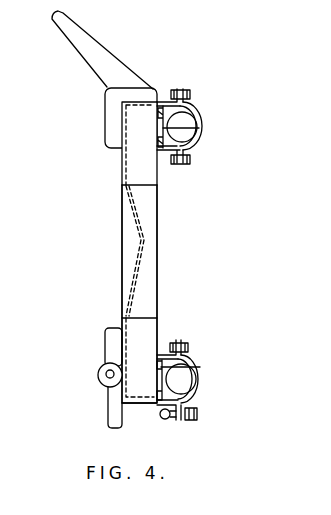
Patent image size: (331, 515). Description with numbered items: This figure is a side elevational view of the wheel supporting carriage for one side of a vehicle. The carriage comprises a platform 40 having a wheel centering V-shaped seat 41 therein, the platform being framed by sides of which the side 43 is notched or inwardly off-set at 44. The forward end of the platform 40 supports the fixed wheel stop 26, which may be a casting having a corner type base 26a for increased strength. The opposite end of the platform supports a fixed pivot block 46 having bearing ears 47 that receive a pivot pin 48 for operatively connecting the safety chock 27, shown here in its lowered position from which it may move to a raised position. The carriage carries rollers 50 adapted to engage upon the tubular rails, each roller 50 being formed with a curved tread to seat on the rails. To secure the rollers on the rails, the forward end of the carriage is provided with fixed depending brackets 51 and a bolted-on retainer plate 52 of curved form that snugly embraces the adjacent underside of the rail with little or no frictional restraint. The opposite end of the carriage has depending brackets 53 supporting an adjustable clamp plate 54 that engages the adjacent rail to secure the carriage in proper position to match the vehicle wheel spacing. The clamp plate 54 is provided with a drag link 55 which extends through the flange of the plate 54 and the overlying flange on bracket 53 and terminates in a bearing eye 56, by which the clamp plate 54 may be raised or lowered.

The fixed wheel stop 26 is at (68, 46).
The corner type base 26a is at (106, 116).
The platform 40 is at (122, 161).
The wheel centering V-shaped seat 41 is at (133, 220).
The side 43 is at (132, 330).
The notch 44 is at (125, 262).
The fixed pivot block 46 is at (108, 341).
The bearing ears 47 is at (99, 375).
The pivot pin 48 is at (109, 378).
The safety chock 27 is at (108, 413).
The rollers 50 is at (198, 132).
The fixed depending brackets 51 is at (168, 99).
The retainer plate 52 is at (193, 111).
The depending brackets 53 is at (165, 356).
The adjustable clamp plate 54 is at (192, 364).
The drag link 55 is at (197, 421).
The bearing eye 56 is at (162, 419).